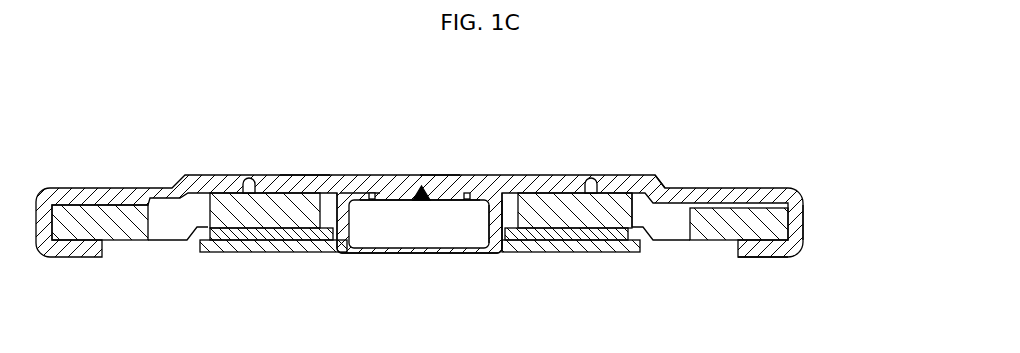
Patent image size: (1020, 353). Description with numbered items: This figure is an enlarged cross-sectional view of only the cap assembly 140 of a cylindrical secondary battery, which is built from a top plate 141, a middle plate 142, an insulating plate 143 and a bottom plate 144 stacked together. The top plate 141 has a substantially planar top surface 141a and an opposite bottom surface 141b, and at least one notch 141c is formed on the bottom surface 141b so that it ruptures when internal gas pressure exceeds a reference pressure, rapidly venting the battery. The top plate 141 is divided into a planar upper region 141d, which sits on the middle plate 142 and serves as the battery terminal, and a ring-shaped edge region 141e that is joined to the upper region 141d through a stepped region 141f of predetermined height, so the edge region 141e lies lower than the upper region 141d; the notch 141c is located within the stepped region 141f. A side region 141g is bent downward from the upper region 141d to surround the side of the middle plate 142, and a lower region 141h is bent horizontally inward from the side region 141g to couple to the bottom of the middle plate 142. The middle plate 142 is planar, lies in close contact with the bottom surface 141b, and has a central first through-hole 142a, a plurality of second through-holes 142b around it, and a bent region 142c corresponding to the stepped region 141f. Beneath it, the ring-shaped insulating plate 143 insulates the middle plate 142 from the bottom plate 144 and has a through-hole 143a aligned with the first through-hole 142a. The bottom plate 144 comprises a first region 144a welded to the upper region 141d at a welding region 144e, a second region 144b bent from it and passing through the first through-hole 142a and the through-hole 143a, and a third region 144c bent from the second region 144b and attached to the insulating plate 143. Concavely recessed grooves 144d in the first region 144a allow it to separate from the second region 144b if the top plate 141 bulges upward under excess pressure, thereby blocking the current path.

The cap assembly 140 is at (780, 138).
The top plate 141 is at (802, 189).
The top surface 141a is at (298, 177).
The bottom surface 141b is at (362, 192).
The notch 141c is at (249, 181).
The upper region 141d is at (437, 190).
The edge region 141e is at (725, 204).
The stepped region 141f is at (671, 186).
The side region 141g is at (803, 218).
The lower region 141h is at (767, 258).
The middle plate 142 is at (718, 244).
The first through-hole 142a is at (510, 203).
The second through-holes 142b is at (671, 229).
The bent region 142c is at (193, 232).
The insulating plate 143 is at (257, 236).
The through-hole 143a is at (345, 253).
The bottom plate 144 is at (612, 260).
The first region 144a is at (446, 203).
The second region 144b is at (478, 205).
The third region 144c is at (540, 250).
The grooves 144d is at (472, 193).
The welding region 144e is at (418, 203).